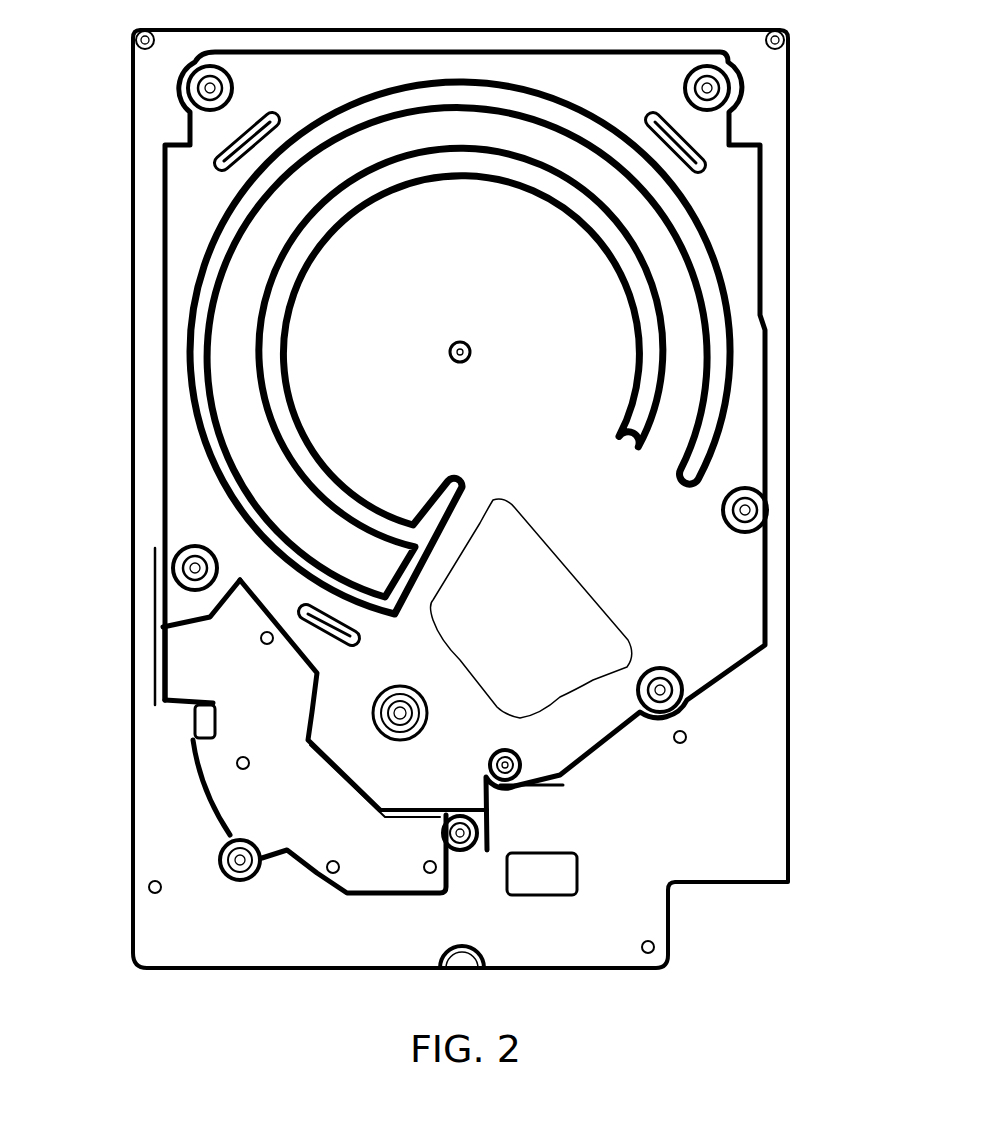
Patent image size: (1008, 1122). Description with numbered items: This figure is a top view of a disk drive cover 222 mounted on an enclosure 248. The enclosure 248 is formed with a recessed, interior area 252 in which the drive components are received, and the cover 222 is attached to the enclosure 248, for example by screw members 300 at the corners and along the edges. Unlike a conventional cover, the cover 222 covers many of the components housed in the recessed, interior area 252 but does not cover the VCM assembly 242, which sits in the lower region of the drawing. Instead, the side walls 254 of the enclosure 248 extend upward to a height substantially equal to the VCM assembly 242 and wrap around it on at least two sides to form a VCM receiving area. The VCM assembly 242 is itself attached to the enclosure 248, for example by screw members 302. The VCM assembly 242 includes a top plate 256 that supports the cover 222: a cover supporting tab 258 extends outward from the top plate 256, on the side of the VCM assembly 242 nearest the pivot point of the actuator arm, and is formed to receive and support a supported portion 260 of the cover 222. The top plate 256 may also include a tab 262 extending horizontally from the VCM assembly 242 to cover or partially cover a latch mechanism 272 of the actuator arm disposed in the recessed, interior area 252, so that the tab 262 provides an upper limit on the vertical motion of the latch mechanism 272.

The cover 222 is at (727, 580).
The screw members 300 is at (207, 87).
The screw members 302 is at (235, 862).
The latch mechanism 272 is at (163, 630).
The tab 262 is at (177, 667).
The recessed, interior area 252 is at (155, 702).
The VCM assembly 242 is at (227, 777).
The top plate 256 is at (288, 830).
The cover supporting tab 258 is at (317, 793).
The supported portion 260 is at (342, 757).
The side walls 254 is at (397, 900).
The enclosure 248 is at (675, 827).